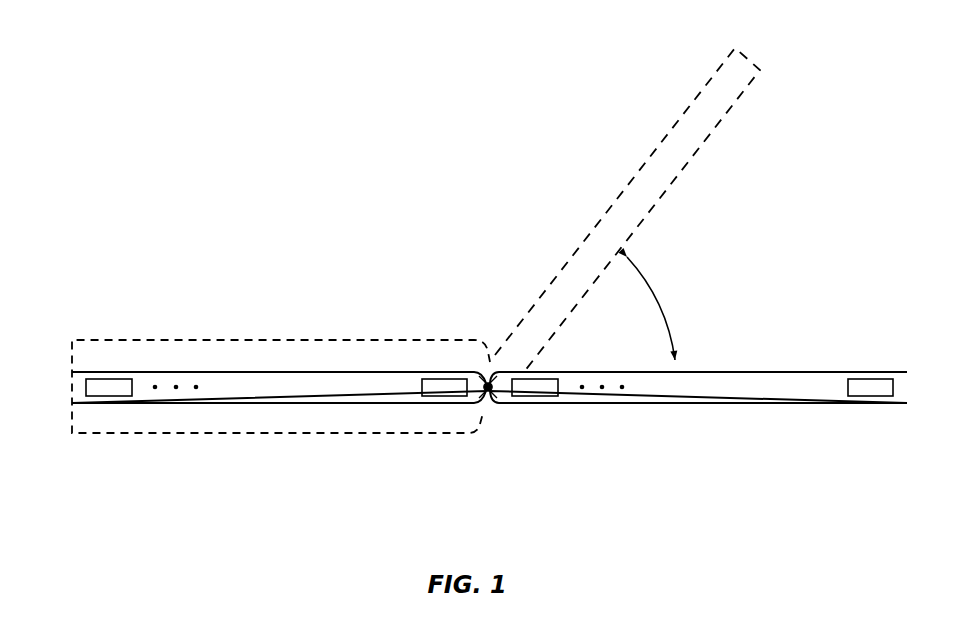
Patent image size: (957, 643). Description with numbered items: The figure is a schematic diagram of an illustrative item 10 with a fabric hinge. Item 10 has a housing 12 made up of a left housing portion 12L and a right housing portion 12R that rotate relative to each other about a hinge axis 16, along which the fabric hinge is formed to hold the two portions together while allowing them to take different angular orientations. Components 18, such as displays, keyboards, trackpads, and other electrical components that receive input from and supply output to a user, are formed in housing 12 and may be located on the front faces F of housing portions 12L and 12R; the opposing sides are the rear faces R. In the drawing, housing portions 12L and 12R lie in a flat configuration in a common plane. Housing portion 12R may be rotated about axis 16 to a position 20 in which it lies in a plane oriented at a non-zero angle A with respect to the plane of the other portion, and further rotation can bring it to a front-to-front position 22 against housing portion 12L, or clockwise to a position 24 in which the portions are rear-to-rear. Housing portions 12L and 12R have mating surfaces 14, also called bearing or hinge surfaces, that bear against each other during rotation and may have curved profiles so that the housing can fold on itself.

The item 10 is at (858, 131).
The housing 12 is at (343, 410).
The housing portion 12L is at (72, 384).
The housing portion 12R is at (903, 403).
The surfaces 14 is at (493, 398).
The hinge axis 16 is at (483, 398).
The components 18 is at (112, 397).
The position 20 is at (750, 57).
The position 22 is at (72, 353).
The position 24 is at (187, 434).
The rear faces R is at (273, 410).
The front faces F is at (272, 358).
The angle A is at (652, 308).